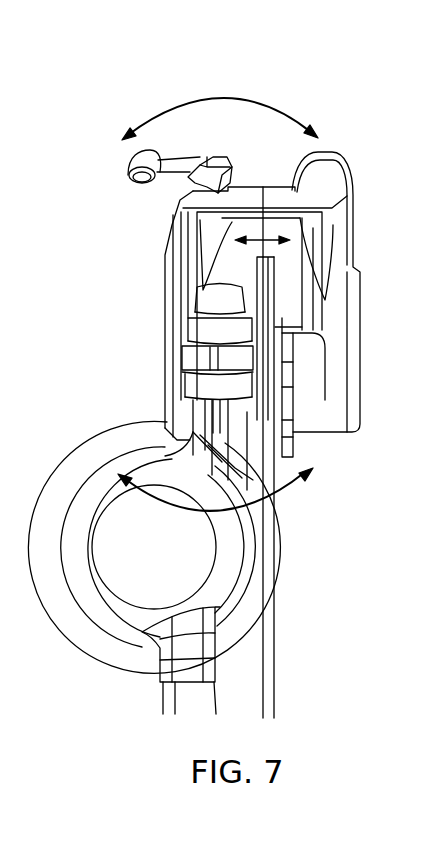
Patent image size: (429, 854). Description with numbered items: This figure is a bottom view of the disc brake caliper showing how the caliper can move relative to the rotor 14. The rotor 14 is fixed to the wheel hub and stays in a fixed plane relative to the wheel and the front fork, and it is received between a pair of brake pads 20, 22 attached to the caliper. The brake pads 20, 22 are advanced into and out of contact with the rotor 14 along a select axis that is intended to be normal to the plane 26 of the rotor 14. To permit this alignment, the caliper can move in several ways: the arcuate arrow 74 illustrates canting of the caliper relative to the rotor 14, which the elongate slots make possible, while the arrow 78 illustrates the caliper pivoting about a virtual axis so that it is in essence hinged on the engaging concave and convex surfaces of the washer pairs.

The rotor 14 is at (275, 676).
The brake pad 20 is at (282, 398).
The brake pad 22 is at (258, 412).
The plane of the rotor 26 is at (272, 477).
The arcuate arrow 74 is at (259, 238).
The arrow 78 is at (170, 105).